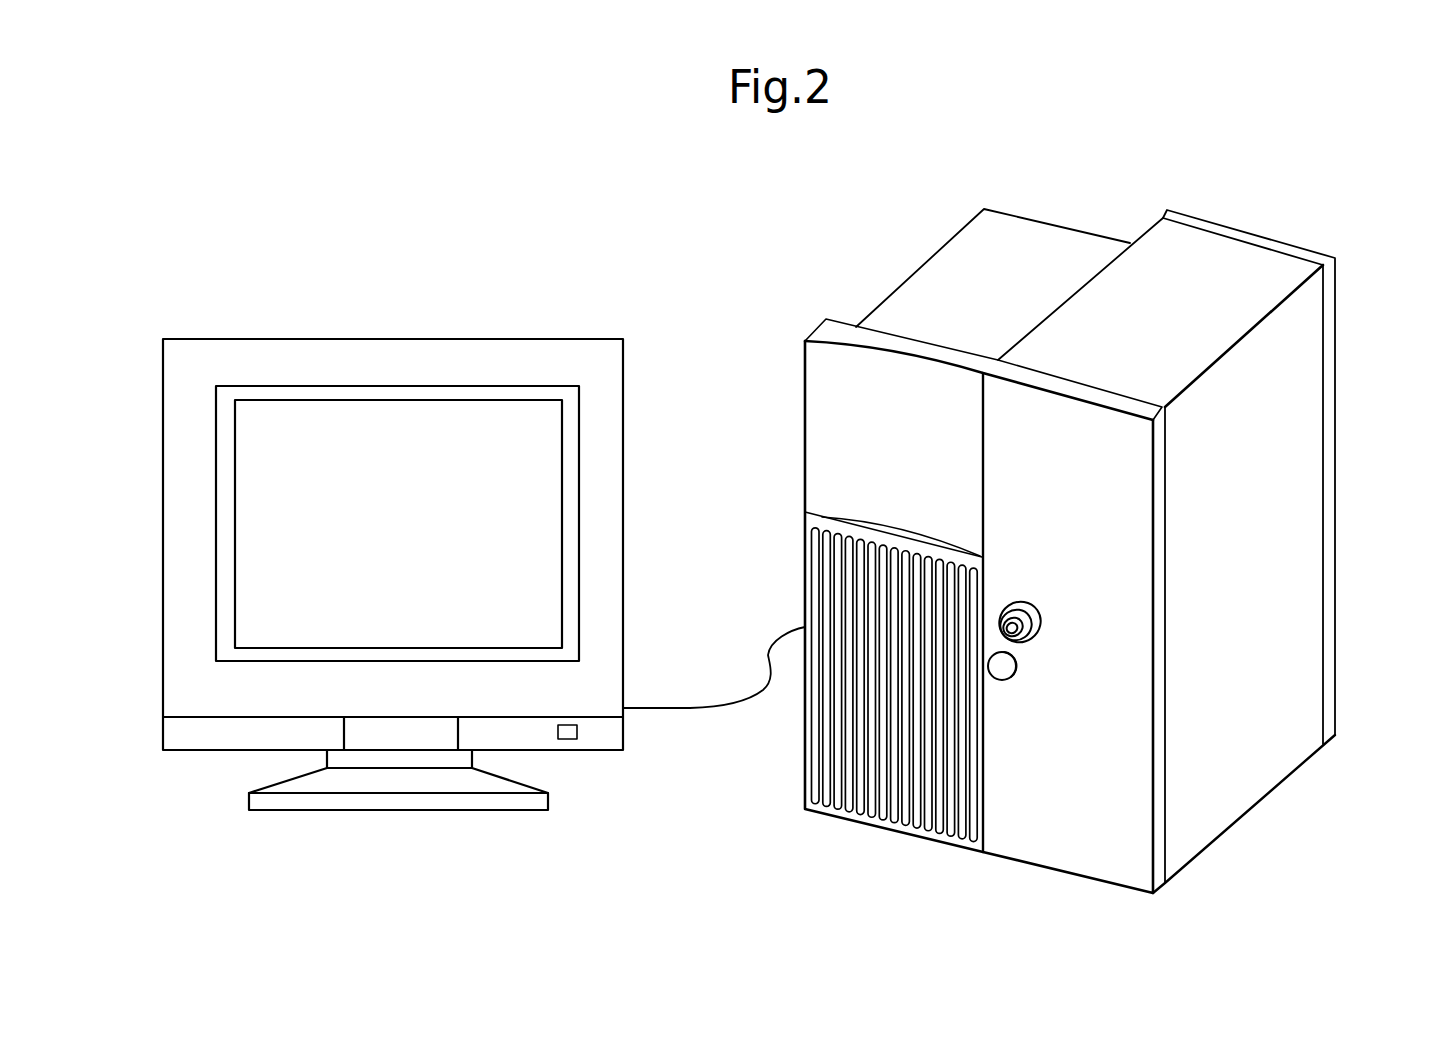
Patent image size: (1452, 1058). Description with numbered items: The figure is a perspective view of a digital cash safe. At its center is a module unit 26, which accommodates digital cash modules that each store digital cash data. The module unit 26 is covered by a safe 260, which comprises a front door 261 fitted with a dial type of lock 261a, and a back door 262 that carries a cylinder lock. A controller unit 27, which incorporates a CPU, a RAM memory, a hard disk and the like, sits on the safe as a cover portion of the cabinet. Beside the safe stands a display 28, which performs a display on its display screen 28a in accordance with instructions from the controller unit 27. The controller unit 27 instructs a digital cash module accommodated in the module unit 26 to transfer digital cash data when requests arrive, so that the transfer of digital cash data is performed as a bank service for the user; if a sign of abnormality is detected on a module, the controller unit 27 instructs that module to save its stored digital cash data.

The module unit 26 is at (1123, 542).
The controller unit 27 is at (967, 279).
The display 28 is at (560, 340).
The display screen 28a is at (351, 397).
The safe 260 is at (1243, 813).
The front door 261 is at (1112, 862).
The dial type of lock 261a is at (1032, 656).
The back door 262 is at (1335, 325).